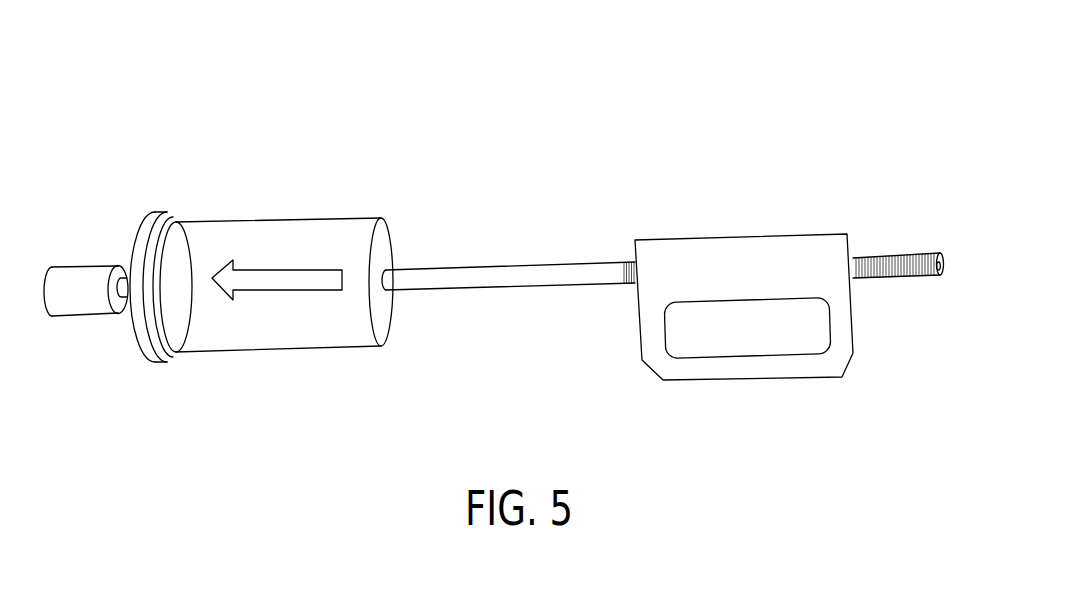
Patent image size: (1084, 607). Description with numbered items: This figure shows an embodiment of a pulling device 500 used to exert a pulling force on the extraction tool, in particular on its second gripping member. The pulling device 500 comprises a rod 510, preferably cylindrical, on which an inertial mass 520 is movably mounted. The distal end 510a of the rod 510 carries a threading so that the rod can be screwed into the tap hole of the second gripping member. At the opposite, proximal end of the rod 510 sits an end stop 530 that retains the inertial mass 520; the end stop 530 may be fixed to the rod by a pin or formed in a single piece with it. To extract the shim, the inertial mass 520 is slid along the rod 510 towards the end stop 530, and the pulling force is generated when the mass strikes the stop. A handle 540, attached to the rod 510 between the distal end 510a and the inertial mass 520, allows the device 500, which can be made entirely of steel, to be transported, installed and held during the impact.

The pulling device 500 is at (420, 112).
The rod 510 is at (491, 275).
The distal end of the rod 510a is at (908, 268).
The inertial mass 520 is at (260, 332).
The end stop 530 is at (88, 277).
The handle 540 is at (658, 352).